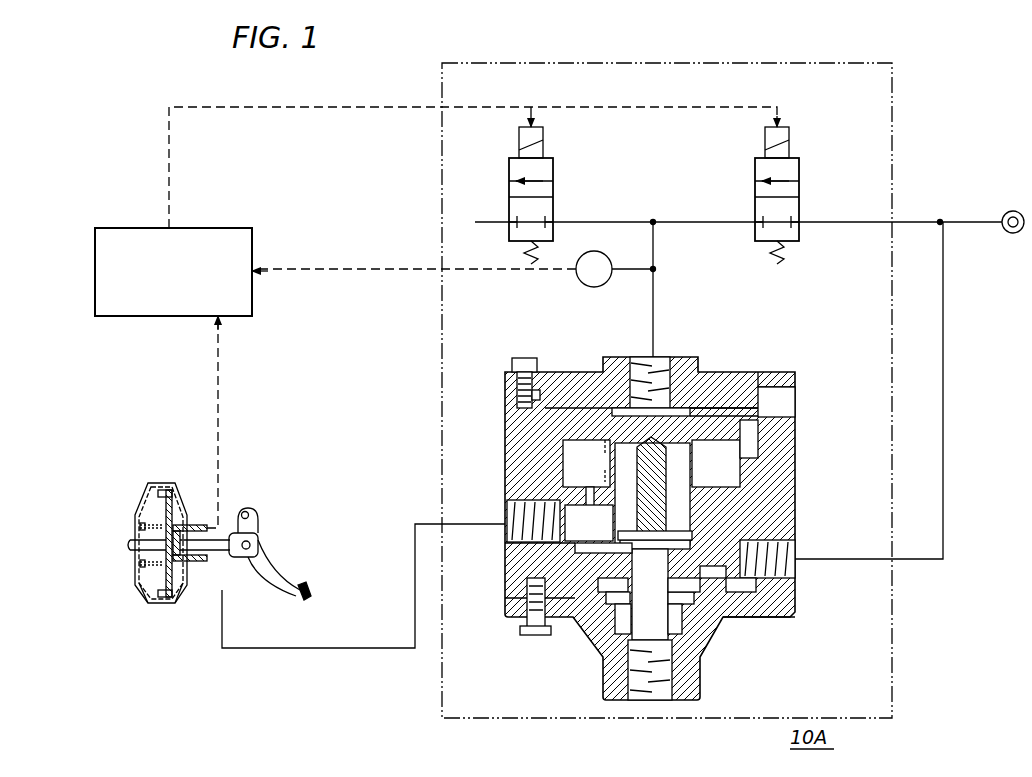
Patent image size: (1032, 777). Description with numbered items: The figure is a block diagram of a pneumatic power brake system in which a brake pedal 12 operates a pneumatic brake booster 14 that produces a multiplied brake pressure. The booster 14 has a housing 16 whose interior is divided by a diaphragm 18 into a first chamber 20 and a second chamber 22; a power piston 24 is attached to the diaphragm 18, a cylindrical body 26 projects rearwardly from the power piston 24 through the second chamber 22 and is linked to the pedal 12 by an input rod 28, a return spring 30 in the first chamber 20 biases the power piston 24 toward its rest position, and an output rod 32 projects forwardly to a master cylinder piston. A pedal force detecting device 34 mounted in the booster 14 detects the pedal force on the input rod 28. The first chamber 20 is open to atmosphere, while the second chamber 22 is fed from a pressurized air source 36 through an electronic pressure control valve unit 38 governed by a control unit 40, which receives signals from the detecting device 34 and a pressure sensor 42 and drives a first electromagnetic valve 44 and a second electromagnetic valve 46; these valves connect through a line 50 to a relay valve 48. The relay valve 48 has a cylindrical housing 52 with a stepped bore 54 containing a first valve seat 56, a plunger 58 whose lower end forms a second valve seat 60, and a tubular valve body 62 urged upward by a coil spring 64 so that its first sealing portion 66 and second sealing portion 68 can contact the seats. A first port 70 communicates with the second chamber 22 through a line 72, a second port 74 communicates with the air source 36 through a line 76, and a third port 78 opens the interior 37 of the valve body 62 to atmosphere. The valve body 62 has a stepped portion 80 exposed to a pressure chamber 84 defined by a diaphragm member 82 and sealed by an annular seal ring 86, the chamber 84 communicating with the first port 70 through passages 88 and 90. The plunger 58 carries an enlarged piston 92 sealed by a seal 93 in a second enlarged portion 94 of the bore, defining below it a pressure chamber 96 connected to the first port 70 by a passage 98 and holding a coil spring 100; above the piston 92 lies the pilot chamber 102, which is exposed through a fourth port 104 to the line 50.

The brake pedal 12 is at (262, 568).
The pneumatic brake booster 14 is at (141, 606).
The housing 16 is at (163, 604).
The diaphragm 18 is at (157, 494).
The first chamber 20 is at (140, 590).
The second chamber 22 is at (182, 602).
The power piston 24 is at (165, 574).
The cylindrical body 26 is at (200, 525).
The input rod 28 is at (216, 552).
The return spring 30 is at (140, 515).
The output rod 32 is at (128, 545).
The pedal force detecting device 34 is at (198, 562).
The pressurized air source 36 is at (1008, 211).
The interior of the valve body 37 is at (660, 572).
The electronic pressure control valve unit 38 is at (898, 667).
The control unit 40 is at (137, 317).
The pressure sensor 42 is at (578, 278).
The first electromagnetic valve 44 is at (801, 165).
The second electromagnetic valve 46 is at (555, 166).
The relay valve 48 is at (803, 394).
The line 50 is at (656, 236).
The cylindrical housing 52 is at (797, 460).
The stepped bore 54 is at (800, 500).
The first valve seat 56 is at (797, 530).
The plunger 58 is at (792, 489).
The second valve seat 60 is at (616, 541).
The tubular valve body 62 is at (706, 620).
The coil spring 64 is at (690, 632).
The first sealing portion 66 is at (770, 588).
The second sealing portion 68 is at (748, 606).
The first port 70 is at (512, 520).
The line 72 is at (343, 650).
The second port 74 is at (797, 570).
The line 76 is at (945, 371).
The third port 78 is at (640, 702).
The stepped portion 80 is at (600, 604).
The diaphragm member 82 is at (522, 580).
The pressure chamber 84 is at (700, 604).
The annular seal ring 86 is at (612, 632).
The passage 88 is at (572, 622).
The passage 90 is at (570, 556).
The piston 92 is at (737, 412).
The seal 93 is at (525, 410).
The second enlarged portion 94 is at (792, 420).
The pressure chamber 96 is at (790, 442).
The passage 98 is at (580, 492).
The coil spring 100 is at (590, 478).
The pilot chamber 102 is at (700, 410).
The fourth port 104 is at (654, 376).